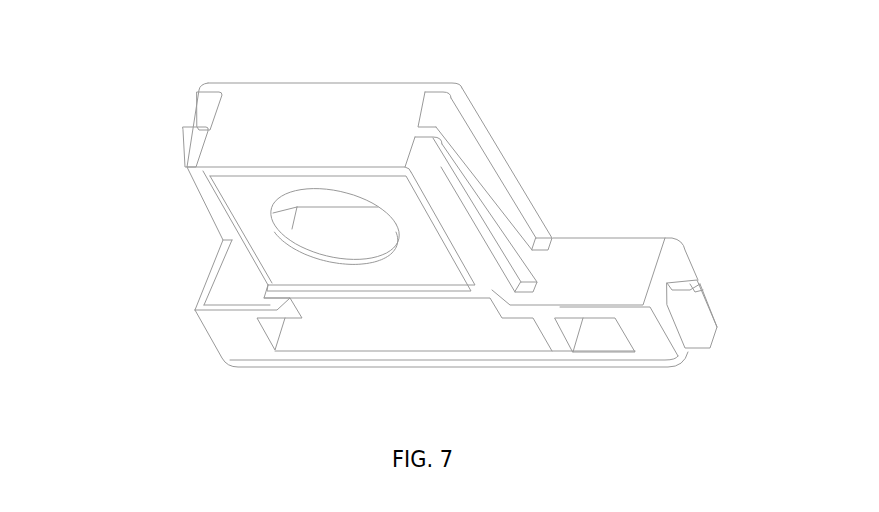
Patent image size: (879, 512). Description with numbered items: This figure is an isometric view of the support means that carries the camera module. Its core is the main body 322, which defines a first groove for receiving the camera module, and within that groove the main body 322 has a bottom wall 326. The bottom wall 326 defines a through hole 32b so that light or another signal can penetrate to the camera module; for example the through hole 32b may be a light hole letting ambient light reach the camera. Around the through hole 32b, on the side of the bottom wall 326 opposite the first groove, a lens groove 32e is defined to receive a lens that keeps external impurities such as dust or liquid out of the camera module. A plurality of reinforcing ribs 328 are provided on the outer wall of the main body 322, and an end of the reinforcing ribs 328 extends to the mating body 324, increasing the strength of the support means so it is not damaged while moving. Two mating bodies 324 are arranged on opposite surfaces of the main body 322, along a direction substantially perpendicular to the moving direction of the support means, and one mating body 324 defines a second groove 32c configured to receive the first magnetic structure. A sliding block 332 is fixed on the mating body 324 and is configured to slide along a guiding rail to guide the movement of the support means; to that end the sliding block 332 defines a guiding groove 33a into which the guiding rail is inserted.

The main body 322 is at (320, 99).
The through hole 32b is at (307, 197).
The reinforcing ribs 328 is at (472, 178).
The bottom wall 326 is at (437, 258).
The mating body 324 is at (600, 260).
The lens groove 32e is at (222, 207).
The second groove 32c is at (607, 345).
The sliding block 332 is at (697, 335).
The guiding groove 33a is at (715, 332).